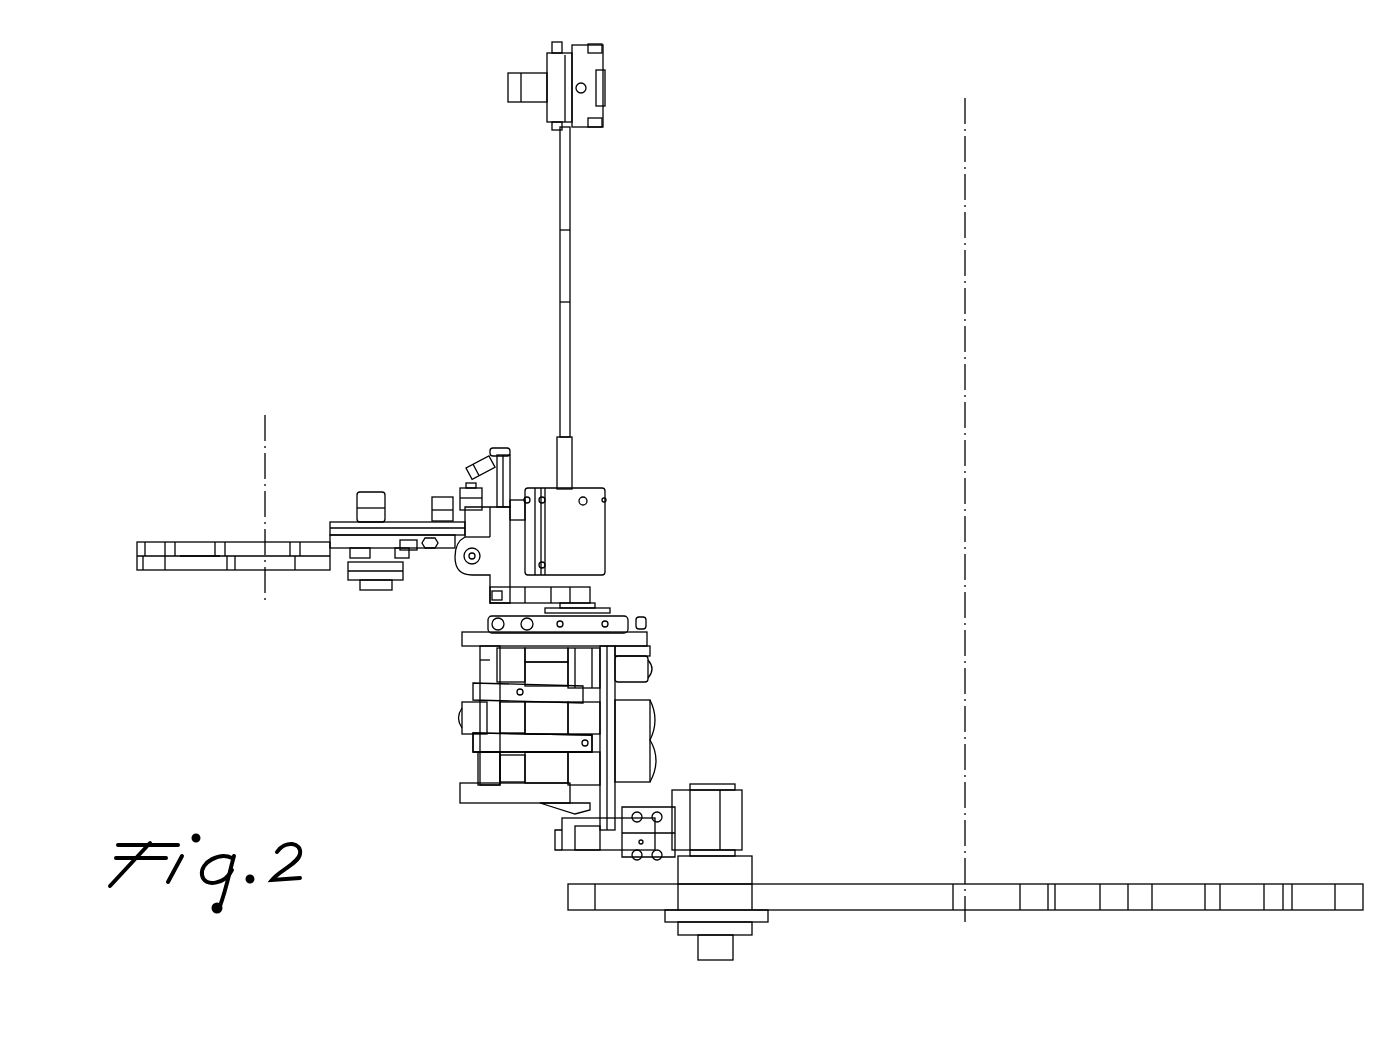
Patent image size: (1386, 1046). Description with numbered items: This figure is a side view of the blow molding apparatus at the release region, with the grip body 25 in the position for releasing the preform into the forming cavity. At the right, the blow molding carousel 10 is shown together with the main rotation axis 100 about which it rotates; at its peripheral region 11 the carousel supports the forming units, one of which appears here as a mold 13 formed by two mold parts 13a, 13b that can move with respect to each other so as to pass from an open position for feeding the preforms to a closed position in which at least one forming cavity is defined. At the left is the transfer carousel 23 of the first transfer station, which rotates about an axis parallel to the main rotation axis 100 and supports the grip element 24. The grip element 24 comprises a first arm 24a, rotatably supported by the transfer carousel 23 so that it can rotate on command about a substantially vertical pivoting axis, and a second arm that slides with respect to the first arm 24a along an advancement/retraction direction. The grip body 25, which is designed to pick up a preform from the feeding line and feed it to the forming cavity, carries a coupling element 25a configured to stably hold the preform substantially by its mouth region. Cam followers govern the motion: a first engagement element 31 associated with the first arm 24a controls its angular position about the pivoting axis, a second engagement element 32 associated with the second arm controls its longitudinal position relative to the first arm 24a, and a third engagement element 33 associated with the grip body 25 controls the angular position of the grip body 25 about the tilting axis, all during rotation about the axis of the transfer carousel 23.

The main rotation axis 100 is at (966, 480).
The blow molding carousel 10 is at (1252, 872).
The peripheral region 11 is at (655, 935).
The mold 13 is at (460, 759).
The mold part 13a is at (545, 742).
The mold part 13b is at (625, 668).
The transfer carousel 23 is at (323, 590).
The grip element 24 is at (410, 488).
The first arm 24a is at (395, 540).
The grip body 25 is at (495, 553).
The coupling element 25a is at (605, 595).
The first engagement element 31 is at (358, 497).
The second engagement element 32 is at (443, 497).
The third engagement element 33 is at (465, 535).